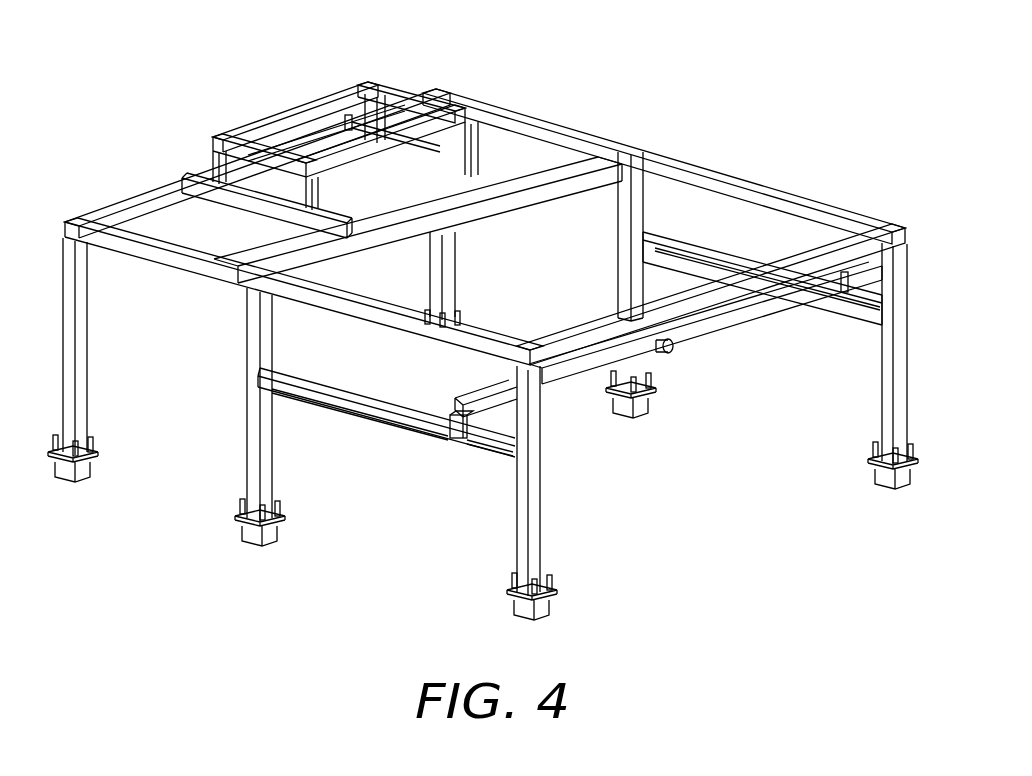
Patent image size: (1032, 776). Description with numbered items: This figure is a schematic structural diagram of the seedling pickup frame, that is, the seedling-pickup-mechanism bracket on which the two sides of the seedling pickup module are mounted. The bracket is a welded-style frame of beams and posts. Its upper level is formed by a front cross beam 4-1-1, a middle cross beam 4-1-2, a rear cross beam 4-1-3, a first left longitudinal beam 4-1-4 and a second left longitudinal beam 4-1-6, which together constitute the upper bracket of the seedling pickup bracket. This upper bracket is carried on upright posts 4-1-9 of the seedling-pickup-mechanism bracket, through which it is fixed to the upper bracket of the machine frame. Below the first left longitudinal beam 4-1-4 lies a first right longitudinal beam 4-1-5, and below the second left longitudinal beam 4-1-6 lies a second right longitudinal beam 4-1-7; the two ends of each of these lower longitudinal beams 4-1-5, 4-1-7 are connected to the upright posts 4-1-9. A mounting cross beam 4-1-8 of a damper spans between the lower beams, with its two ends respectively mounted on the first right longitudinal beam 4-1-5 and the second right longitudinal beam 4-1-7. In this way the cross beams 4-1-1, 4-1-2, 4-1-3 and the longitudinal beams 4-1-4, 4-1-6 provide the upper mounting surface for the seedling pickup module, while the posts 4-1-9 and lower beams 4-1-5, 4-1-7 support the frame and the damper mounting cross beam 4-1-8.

The front cross beam 4-1-1 is at (930, 138).
The middle cross beam 4-1-2 is at (600, 63).
The rear cross beam 4-1-3 is at (240, 63).
The first left longitudinal beam 4-1-4 is at (115, 578).
The first right longitudinal beam 4-1-5 is at (225, 578).
The second left longitudinal beam 4-1-6 is at (755, 63).
The second right longitudinal beam 4-1-7 is at (860, 63).
The mounting cross beam of a damper 4-1-8 is at (785, 508).
The upright posts of the seedling-pickup-mechanism bracket 4-1-9 is at (647, 508).